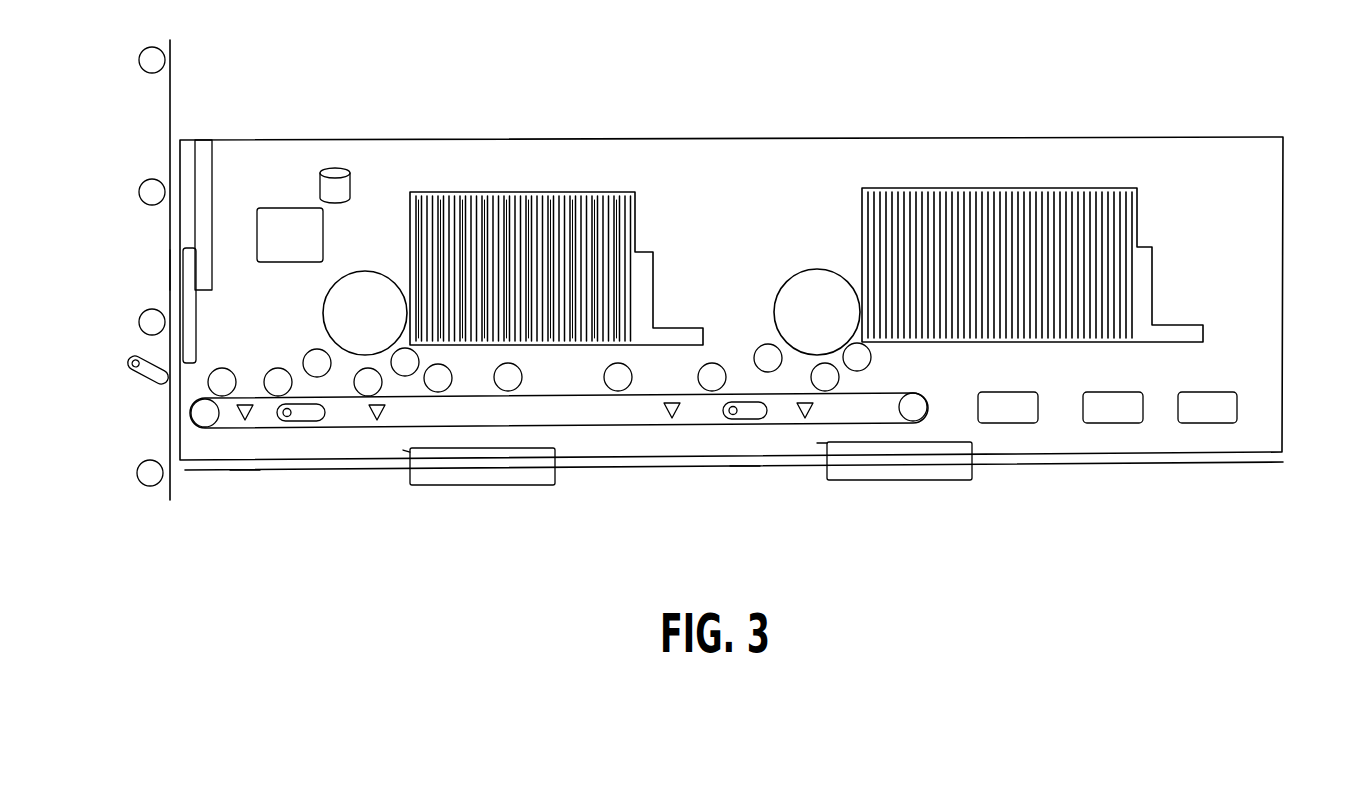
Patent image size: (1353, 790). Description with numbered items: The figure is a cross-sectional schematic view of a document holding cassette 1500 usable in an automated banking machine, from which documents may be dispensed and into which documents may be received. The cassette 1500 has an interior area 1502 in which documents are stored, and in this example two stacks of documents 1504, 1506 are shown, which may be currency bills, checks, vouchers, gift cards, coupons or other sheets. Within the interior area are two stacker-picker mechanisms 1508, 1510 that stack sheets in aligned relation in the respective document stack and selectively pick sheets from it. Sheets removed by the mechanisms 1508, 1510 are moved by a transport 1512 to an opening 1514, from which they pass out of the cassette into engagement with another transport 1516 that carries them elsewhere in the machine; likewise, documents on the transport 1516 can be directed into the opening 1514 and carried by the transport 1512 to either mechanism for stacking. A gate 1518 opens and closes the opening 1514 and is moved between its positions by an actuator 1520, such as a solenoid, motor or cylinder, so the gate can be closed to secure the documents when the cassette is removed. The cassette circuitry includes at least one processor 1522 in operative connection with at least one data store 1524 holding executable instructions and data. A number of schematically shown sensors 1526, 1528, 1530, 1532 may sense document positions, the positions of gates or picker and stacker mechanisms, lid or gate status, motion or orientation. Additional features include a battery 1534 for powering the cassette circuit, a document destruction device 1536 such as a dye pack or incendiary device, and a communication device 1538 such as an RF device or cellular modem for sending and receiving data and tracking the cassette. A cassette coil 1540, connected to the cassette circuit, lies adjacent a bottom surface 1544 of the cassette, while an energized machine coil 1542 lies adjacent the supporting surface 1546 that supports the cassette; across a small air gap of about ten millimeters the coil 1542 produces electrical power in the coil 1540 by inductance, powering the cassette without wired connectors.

The cassette 1500 is at (1015, 122).
The interior area 1502 is at (1250, 158).
The stack of documents 1504 is at (525, 192).
The stack of documents 1506 is at (922, 186).
The stacker-picker mechanism 1508 is at (340, 328).
The stacker-picker mechanism 1510 is at (807, 292).
The transport 1512 is at (640, 398).
The opening 1514 is at (172, 436).
The transport 1516 is at (174, 72).
The gate 1518 is at (172, 270).
The actuator 1520 is at (215, 290).
The processor 1522 is at (276, 208).
The data store 1524 is at (352, 193).
The sensor 1526 is at (413, 184).
The sensor 1528 is at (657, 181).
The sensor 1530 is at (865, 182).
The sensor 1532 is at (1155, 180).
The battery 1534 is at (1218, 424).
The document destruction device 1536 is at (1120, 424).
The communication device 1538 is at (1019, 424).
The coil 1540 is at (403, 450).
The machine coil 1542 is at (467, 486).
The bottom surface 1544 is at (242, 464).
The supporting surface 1546 is at (743, 466).